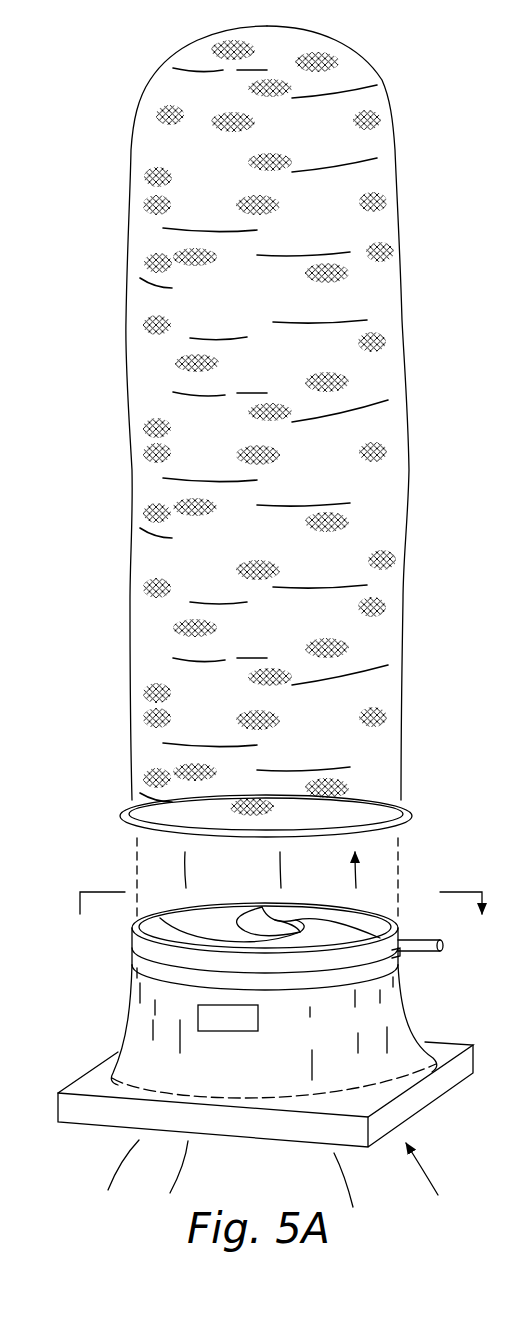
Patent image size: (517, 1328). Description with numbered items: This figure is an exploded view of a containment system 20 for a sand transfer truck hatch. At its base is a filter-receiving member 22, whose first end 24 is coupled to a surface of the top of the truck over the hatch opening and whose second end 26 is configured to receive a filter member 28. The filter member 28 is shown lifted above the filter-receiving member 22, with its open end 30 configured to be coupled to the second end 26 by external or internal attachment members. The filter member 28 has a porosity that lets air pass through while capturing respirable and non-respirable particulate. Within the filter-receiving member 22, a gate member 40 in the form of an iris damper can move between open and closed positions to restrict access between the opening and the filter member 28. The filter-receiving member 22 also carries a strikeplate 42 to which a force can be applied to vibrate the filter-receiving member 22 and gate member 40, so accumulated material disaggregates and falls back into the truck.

The containment system 20 is at (84, 576).
The filter-receiving member 22 is at (131, 1011).
The first end 24 is at (413, 1098).
The second end 26 is at (135, 925).
The filter member 28 is at (398, 524).
The open end 30 is at (392, 829).
The gate member 40 is at (398, 920).
The strikeplate 42 is at (258, 1018).